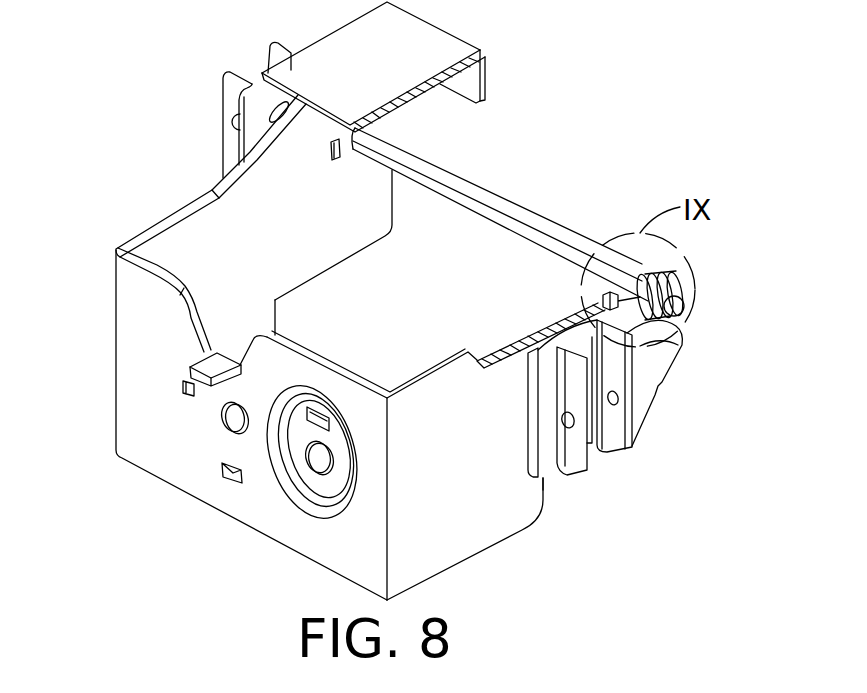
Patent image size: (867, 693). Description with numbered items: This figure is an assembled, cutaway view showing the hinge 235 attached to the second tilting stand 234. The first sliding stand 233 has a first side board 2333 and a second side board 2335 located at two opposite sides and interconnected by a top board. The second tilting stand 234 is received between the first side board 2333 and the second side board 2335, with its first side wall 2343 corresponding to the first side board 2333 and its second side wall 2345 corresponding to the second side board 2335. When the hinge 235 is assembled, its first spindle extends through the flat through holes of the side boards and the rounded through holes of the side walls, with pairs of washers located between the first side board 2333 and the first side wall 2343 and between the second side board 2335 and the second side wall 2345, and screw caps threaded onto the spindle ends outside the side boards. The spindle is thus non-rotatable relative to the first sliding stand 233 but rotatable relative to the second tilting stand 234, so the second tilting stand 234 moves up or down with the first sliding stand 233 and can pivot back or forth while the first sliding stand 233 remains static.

The first sliding stand 233 is at (337, 50).
The second side board 2335 is at (258, 103).
The second side wall 2345 is at (203, 232).
The second tilting stand 234 is at (137, 325).
The hinge 235 is at (497, 200).
The first side board 2333 is at (657, 350).
The first side wall 2343 is at (463, 503).